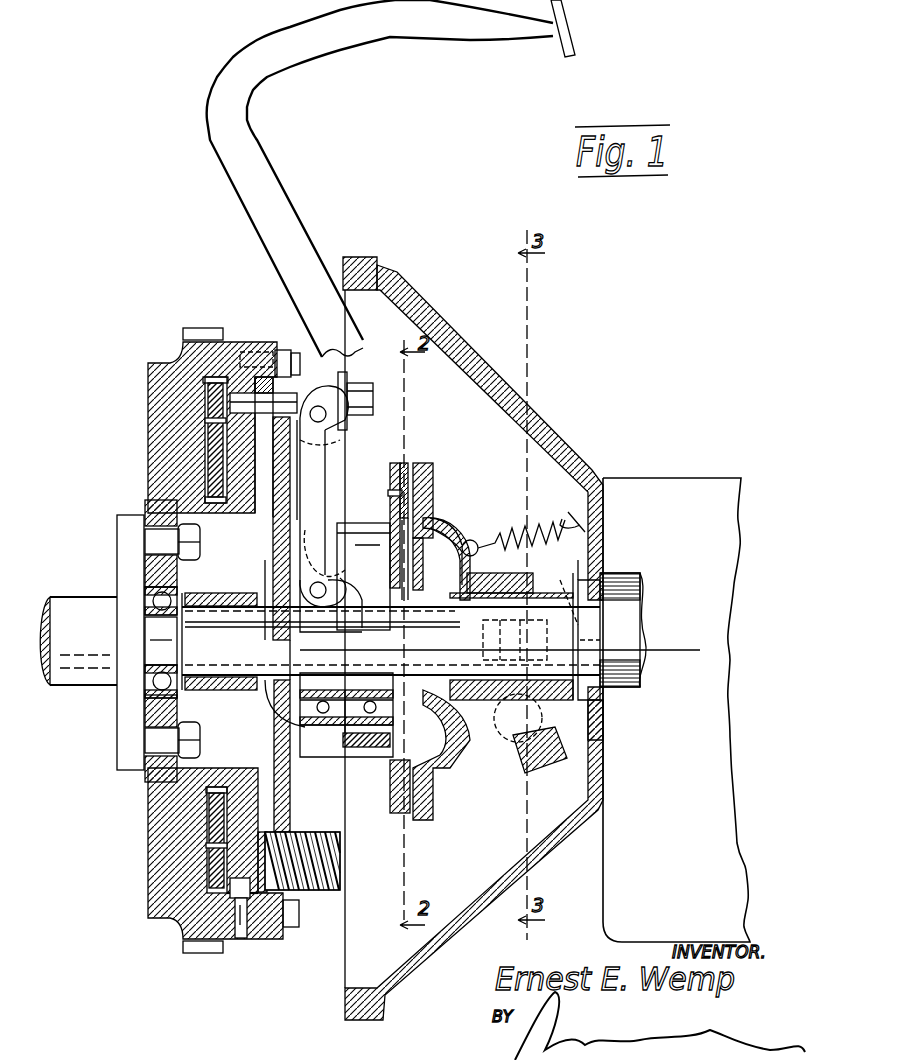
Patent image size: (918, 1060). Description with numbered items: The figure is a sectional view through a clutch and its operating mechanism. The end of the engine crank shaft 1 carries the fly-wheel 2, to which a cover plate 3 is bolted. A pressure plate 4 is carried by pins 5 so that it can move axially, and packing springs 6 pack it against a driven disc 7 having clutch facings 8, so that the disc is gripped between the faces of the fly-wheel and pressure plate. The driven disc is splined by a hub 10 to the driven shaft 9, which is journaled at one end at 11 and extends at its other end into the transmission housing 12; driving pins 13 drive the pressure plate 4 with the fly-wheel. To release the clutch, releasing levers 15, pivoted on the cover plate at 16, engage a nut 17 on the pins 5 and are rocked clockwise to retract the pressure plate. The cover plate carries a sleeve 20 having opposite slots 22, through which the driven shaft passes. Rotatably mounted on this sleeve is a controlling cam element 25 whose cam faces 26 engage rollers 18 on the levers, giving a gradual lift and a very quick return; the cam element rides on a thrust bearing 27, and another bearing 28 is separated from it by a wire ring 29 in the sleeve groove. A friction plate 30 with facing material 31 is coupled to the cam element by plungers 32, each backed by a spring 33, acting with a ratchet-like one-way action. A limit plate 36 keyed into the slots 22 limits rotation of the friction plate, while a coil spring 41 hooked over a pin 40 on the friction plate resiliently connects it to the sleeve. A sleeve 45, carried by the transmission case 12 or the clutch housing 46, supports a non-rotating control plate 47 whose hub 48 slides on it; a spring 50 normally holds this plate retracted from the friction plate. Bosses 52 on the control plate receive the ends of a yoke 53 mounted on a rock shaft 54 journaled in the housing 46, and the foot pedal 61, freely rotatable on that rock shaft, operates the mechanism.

The engine crank shaft 1 is at (58, 608).
The fly-wheel 2 is at (160, 385).
The cover plate 3 is at (292, 345).
The pressure plate 4 is at (240, 372).
The pins 5 is at (336, 348).
The packing springs 6 is at (335, 866).
The driven disc 7 is at (205, 520).
The clutch facings 8 is at (214, 455).
The driven shaft 9 is at (245, 592).
The hub 10 is at (187, 573).
The journal 11 is at (177, 615).
The transmission housing 12 is at (676, 710).
The driving pins 13 is at (255, 895).
The releasing levers 15 is at (324, 496).
The pivot 16 is at (323, 420).
The nut 17 is at (364, 398).
The rollers 18 is at (324, 600).
The sleeve 20 is at (465, 712).
The slots 22 is at (440, 625).
The controlling cam element 25 is at (358, 522).
The cam faces 26 is at (338, 549).
The thrust bearing 27 is at (305, 758).
The bearing 28 is at (385, 735).
The wire ring 29 is at (347, 690).
The friction plate 30 is at (393, 465).
The facing material 31 is at (410, 463).
The plungers 32 is at (382, 770).
The spring 33 is at (355, 760).
The limit plate 36 is at (462, 545).
The pin 40 is at (432, 538).
The coil spring 41 is at (490, 540).
The sleeve 45 is at (590, 622).
The clutch housing 46 is at (555, 835).
The control plate 47 is at (437, 480).
The hub 48 is at (550, 585).
The spring 50 is at (560, 520).
The bosses 52 is at (600, 648).
The yoke 53 is at (603, 742).
The rock shaft 54 is at (522, 712).
The foot pedal 61 is at (372, 42).